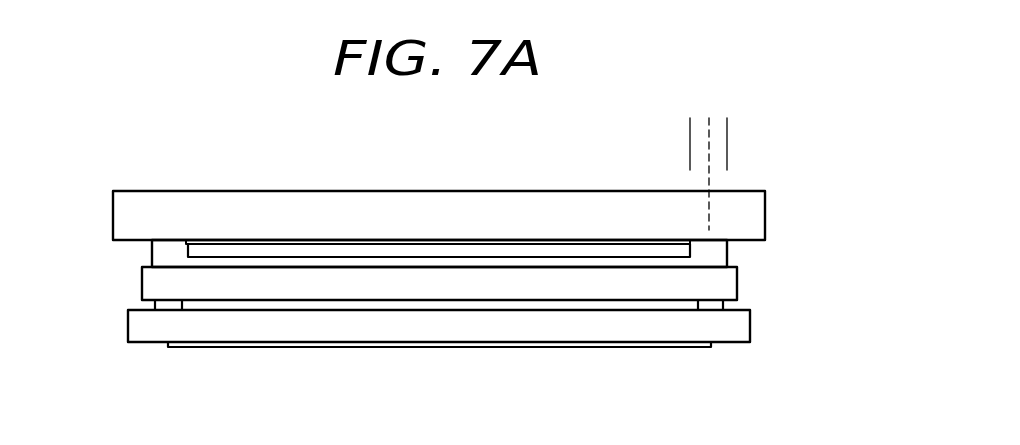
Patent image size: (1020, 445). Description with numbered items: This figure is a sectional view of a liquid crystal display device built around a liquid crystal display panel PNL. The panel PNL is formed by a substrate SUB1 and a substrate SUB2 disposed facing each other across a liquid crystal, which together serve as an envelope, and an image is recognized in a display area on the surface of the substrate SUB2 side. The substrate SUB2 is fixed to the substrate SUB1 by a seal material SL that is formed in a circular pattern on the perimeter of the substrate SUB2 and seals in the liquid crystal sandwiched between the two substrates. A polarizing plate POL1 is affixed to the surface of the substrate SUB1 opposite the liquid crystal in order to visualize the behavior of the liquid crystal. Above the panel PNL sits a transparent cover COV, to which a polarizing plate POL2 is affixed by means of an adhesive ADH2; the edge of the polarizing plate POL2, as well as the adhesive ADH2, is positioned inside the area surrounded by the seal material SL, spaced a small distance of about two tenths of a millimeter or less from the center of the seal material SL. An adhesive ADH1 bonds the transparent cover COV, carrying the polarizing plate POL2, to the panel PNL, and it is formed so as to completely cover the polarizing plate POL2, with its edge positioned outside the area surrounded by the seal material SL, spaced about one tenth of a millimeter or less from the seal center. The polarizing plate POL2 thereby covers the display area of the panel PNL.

The transparent cover COV is at (413, 192).
The adhesive ADH1 is at (288, 263).
The adhesive ADH2 is at (519, 240).
The polarizing plate POL2 is at (602, 251).
The liquid crystal display panel PNL is at (102, 267).
The substrate SUB2 is at (600, 292).
The seal material SL is at (168, 305).
The substrate SUB1 is at (297, 323).
The polarizing plate POL1 is at (503, 347).